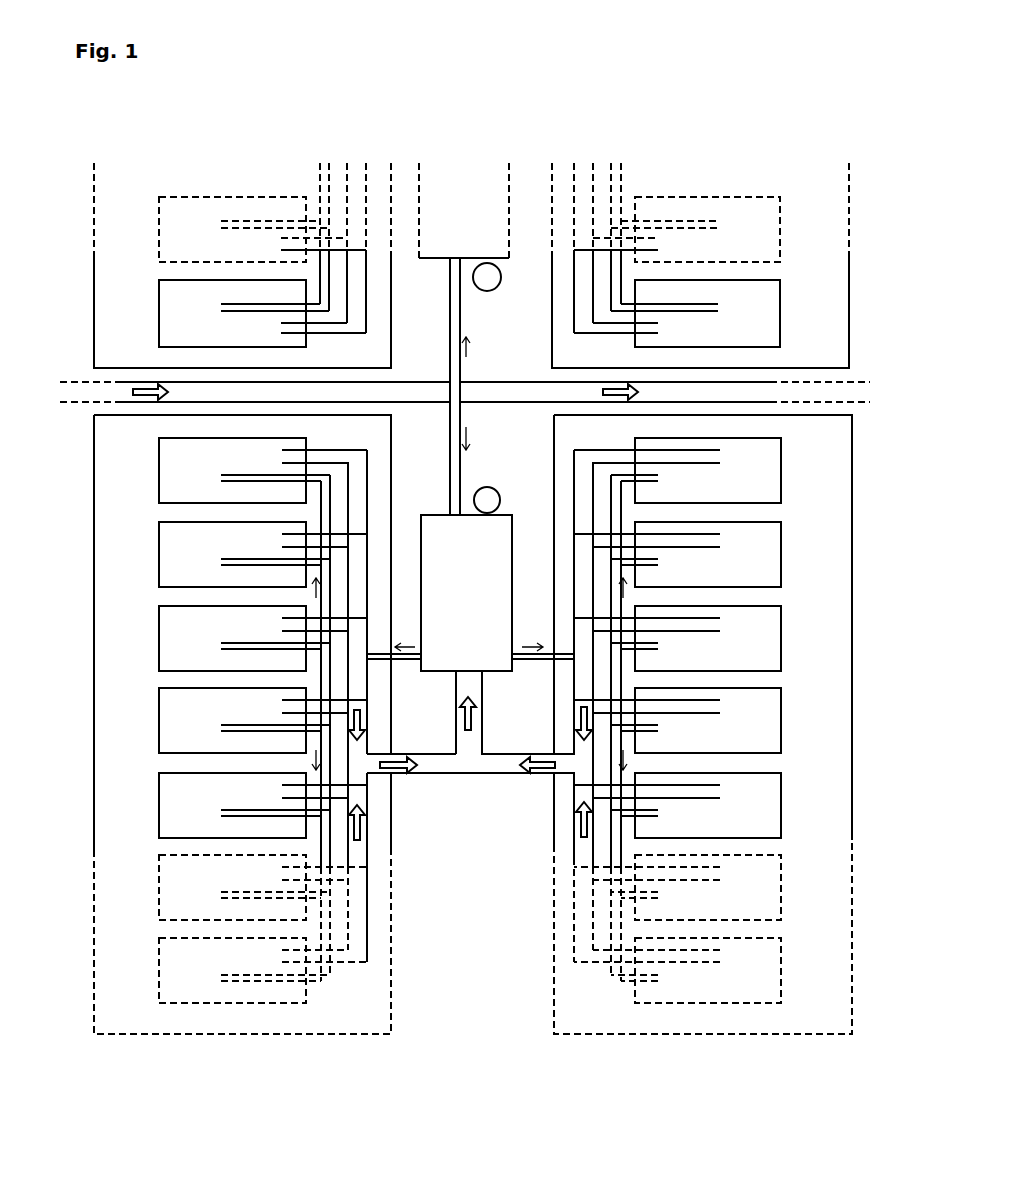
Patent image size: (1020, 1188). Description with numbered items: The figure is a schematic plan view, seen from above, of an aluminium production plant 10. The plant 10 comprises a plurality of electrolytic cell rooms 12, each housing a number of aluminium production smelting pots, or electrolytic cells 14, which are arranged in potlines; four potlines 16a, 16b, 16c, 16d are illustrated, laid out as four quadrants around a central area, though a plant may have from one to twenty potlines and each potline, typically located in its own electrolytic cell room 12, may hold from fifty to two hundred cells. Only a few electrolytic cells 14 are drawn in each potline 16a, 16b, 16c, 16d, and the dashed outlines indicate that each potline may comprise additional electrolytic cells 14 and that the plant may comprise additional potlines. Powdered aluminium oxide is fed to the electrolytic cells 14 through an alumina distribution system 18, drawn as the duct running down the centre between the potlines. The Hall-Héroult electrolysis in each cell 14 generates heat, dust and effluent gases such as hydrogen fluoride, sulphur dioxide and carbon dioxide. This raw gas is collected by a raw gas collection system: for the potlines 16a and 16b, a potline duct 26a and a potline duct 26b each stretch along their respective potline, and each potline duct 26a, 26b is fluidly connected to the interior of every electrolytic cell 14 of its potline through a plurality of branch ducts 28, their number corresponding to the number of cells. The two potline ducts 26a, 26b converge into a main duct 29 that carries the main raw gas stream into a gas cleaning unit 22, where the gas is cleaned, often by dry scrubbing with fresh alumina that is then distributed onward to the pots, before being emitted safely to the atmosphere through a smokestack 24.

The aluminium production plant 10 is at (795, 84).
The electrolytic cell room 12 is at (183, 1036).
The electrolytic cell 14 is at (159, 227).
The potline 16a is at (285, 1076).
The potline 16b is at (707, 1076).
The potline 16c is at (672, 119).
The potline 16d is at (235, 109).
The alumina distribution system 18 is at (410, 380).
The gas cleaning unit 22 is at (437, 672).
The smokestack 24 is at (490, 487).
The potline duct 26a is at (367, 855).
The potline duct 26b is at (575, 858).
The branch duct 28 is at (340, 533).
The main duct 29 is at (483, 688).